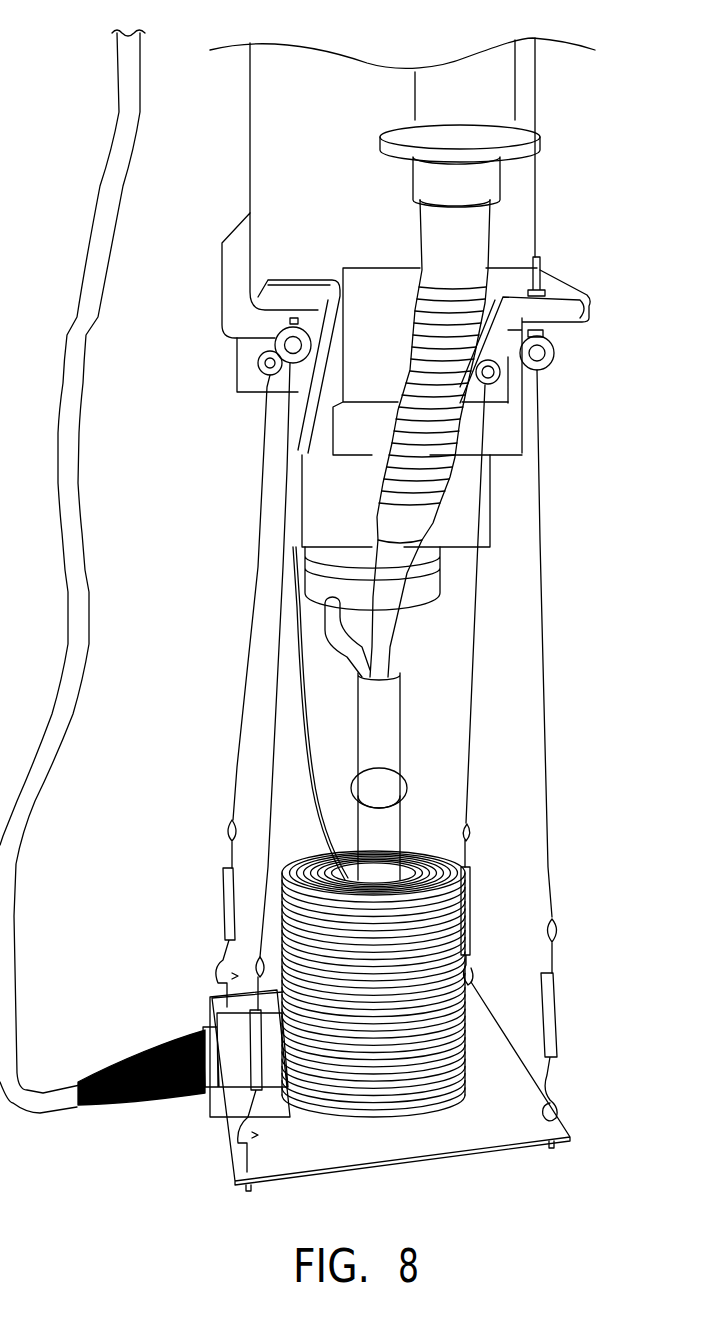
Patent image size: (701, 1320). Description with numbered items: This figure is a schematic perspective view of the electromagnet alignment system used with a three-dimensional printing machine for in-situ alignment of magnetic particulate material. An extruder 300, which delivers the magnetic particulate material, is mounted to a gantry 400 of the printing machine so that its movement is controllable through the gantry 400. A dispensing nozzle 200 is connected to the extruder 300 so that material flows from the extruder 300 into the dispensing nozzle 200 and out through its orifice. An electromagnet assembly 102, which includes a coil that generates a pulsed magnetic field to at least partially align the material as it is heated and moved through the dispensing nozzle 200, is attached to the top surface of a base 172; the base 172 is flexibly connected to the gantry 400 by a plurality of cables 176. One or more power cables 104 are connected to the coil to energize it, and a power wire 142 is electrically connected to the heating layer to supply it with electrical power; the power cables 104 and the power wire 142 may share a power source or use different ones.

The gantry 400 is at (555, 35).
The extruder 300 is at (388, 640).
The dispensing nozzle 200 is at (377, 838).
The power wire 142 is at (307, 773).
The cables 176 is at (550, 840).
The base 172 is at (505, 1137).
The electromagnet assembly 102 is at (335, 1103).
The power cables 104 is at (227, 1105).